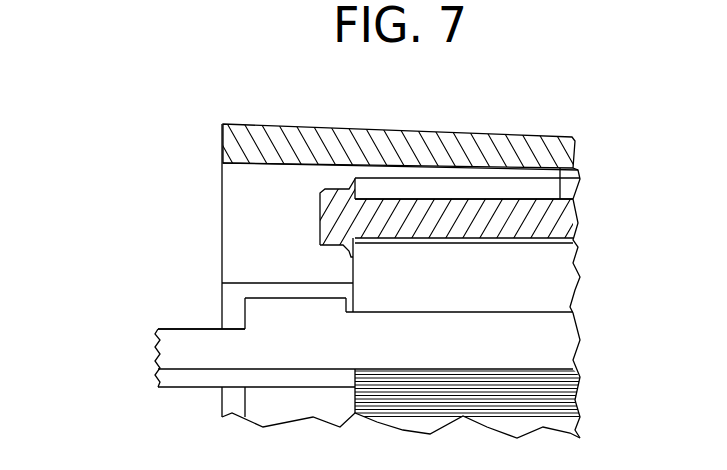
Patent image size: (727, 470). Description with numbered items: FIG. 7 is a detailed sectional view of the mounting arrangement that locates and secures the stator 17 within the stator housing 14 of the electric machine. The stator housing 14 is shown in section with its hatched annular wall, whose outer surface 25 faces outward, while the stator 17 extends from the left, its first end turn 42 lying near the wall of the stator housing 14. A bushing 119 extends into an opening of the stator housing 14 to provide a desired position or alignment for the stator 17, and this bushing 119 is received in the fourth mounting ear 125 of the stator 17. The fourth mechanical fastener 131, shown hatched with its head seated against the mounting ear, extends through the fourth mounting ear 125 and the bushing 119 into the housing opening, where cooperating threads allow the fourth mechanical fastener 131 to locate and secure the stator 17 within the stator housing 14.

The stator housing 14 is at (223, 99).
The outer surface 25 is at (315, 130).
The fourth mounting ear 125 is at (425, 180).
The bushing 119 is at (560, 192).
The fourth mechanical fastener 131 is at (523, 228).
The first end turn 42 is at (181, 317).
The stator 17 is at (138, 374).